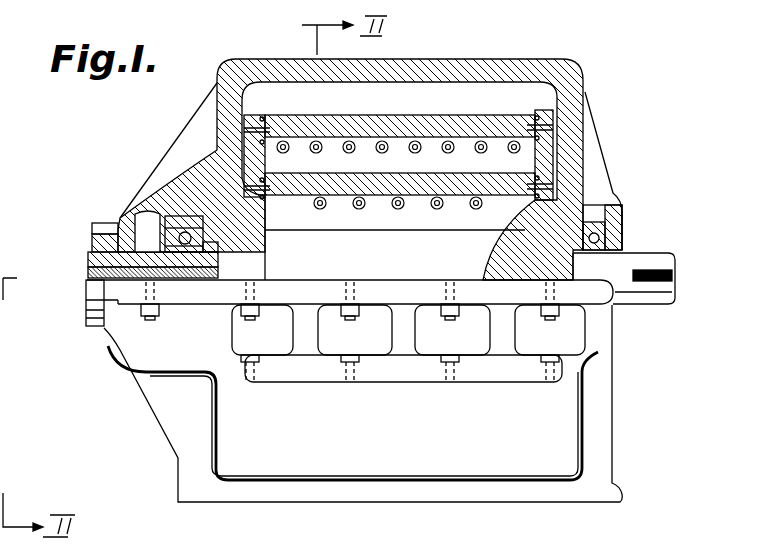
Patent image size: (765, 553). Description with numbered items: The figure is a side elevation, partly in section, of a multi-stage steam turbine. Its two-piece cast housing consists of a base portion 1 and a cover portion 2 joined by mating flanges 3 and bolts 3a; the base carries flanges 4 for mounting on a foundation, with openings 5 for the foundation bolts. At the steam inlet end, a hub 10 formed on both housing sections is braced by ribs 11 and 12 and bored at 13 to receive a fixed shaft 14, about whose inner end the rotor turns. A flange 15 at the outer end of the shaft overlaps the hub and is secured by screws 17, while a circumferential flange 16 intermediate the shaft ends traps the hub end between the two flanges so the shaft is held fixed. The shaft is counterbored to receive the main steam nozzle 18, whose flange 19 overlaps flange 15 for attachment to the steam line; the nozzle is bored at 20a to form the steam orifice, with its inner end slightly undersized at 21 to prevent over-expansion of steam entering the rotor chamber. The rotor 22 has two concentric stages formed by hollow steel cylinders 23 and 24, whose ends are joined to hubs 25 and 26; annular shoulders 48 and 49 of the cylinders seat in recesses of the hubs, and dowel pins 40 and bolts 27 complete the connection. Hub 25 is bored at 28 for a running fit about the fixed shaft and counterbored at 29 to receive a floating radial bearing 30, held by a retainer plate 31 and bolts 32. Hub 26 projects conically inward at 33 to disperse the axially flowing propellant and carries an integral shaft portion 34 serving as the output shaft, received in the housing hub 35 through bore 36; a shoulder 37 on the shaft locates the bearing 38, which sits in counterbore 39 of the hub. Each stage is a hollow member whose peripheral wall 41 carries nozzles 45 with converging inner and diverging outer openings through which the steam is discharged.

The base portion 1 is at (117, 357).
The cover portion 2 is at (228, 84).
The mating flanges 3 is at (331, 306).
The bolts 3a is at (450, 312).
The flanges 4 is at (405, 374).
The openings 5 is at (345, 384).
The hub 10 is at (140, 200).
The ribs 11 is at (195, 112).
The ribs 12 is at (152, 421).
The bore 13 is at (112, 228).
The fixed shaft 14 is at (173, 282).
The flange 15 is at (98, 223).
The circumferential flange 16 is at (122, 214).
The screws 17 is at (90, 320).
The main steam nozzle 18 is at (140, 282).
The flange 19 is at (88, 287).
The bore (orifice) 20a is at (193, 282).
The undersized inner end 21 is at (220, 270).
The rotor 22 is at (386, 97).
The hollow steel cylinder (inner stage) 23 is at (422, 204).
The hollow steel cylinder (outer stage) 24 is at (446, 114).
The hub 25 is at (210, 182).
The hub 26 is at (550, 162).
The bolts 27 is at (548, 127).
The bore 28 is at (218, 246).
The counter-bore 29 is at (192, 232).
The radial bearing 30 is at (213, 228).
The retainer plate 31 is at (177, 215).
The bolts 32 is at (165, 215).
The conical projection 33 is at (516, 257).
The shaft portion (output shaft) 34 is at (668, 252).
The hub 35 is at (609, 214).
The bore 36 is at (607, 288).
The shoulder 37 is at (592, 284).
The bearing 38 is at (605, 232).
The counterbore 39 is at (600, 190).
The dowel pins 40 is at (371, 82).
The peripheral wall 41 is at (441, 197).
The nozzle 45 is at (346, 152).
The annular shoulder 48 is at (256, 118).
The annular shoulder 49 is at (547, 112).